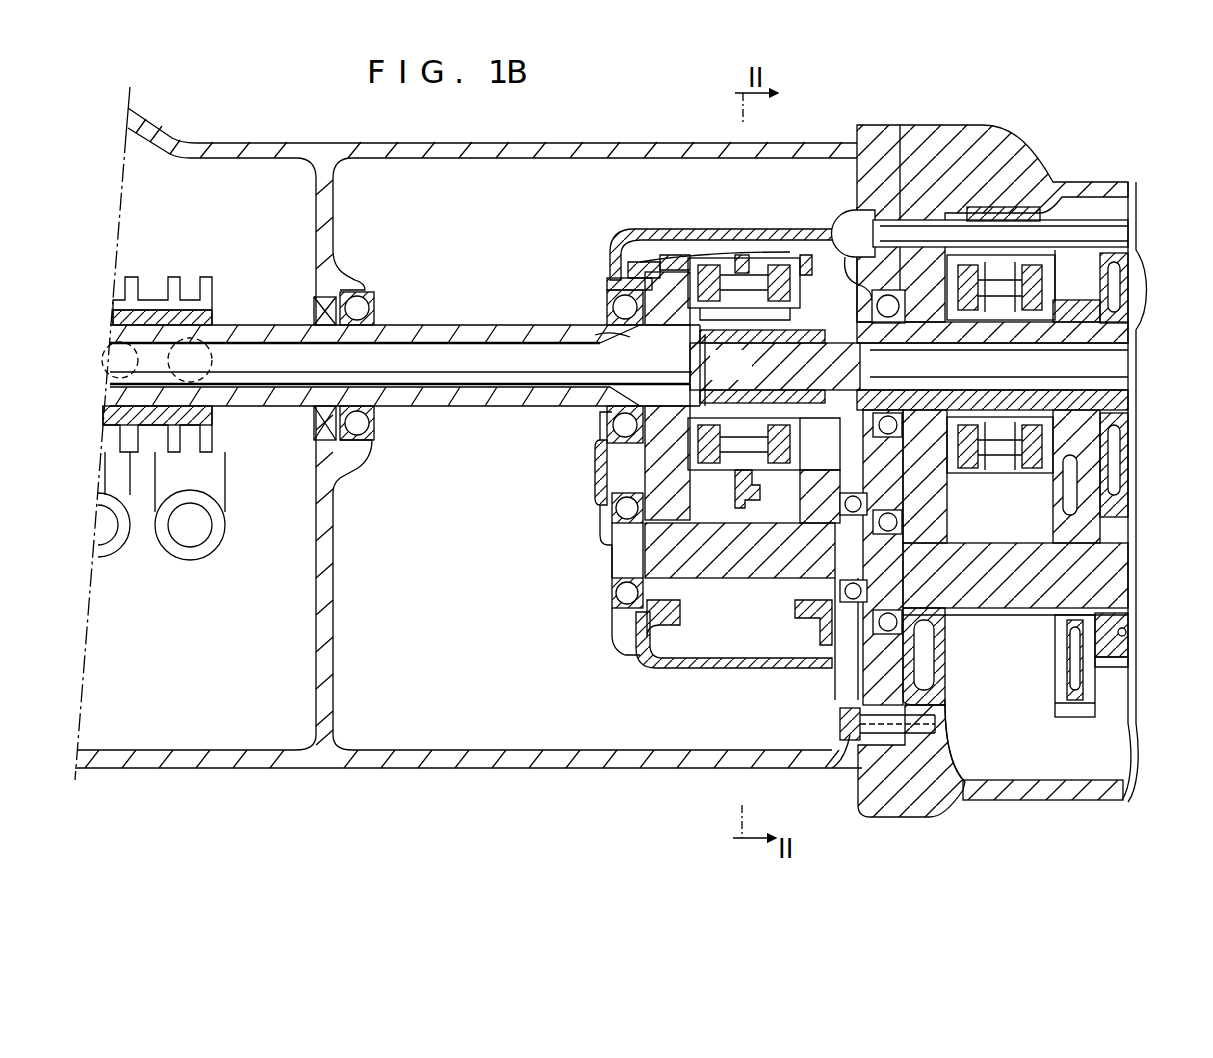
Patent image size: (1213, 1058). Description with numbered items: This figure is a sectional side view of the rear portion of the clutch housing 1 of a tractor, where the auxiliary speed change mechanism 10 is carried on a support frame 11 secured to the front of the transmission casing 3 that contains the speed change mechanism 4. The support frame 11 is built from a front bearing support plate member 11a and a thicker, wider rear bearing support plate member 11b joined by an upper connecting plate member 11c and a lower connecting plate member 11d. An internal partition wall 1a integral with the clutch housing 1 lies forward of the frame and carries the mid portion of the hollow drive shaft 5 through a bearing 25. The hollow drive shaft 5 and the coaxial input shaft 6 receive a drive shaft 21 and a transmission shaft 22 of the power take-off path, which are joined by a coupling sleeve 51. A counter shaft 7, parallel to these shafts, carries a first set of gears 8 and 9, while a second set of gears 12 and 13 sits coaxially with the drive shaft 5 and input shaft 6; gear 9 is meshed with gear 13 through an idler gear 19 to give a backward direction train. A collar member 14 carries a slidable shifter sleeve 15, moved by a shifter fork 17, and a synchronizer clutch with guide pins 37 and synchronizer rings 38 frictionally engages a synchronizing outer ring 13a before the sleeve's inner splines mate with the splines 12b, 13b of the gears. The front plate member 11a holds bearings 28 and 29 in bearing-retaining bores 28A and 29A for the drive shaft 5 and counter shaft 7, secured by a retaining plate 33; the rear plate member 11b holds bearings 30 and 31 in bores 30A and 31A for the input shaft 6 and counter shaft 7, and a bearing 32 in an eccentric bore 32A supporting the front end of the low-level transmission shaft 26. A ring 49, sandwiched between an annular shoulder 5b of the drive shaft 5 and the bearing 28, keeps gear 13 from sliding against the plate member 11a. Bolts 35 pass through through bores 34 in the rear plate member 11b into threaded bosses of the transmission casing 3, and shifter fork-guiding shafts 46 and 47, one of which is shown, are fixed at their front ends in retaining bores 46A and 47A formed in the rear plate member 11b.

The clutch housing 1 is at (178, 148).
The internal partition wall 1a is at (333, 592).
The transmission casing 3 is at (1075, 192).
The speed change mechanism 4 is at (1085, 280).
The drive shaft 5 is at (462, 324).
The annular shoulder 5b is at (660, 332).
The input shaft 6 is at (955, 483).
The counter shaft 7 is at (745, 560).
The gear 8 is at (835, 650).
The gear 9 is at (650, 660).
The auxiliary speed change mechanism 10 is at (725, 660).
The support frame 11 is at (704, 226).
The front bearing support plate member 11a is at (600, 498).
The rear bearing support plate member 11b is at (965, 535).
The upper connecting plate member 11c is at (730, 250).
The lower connecting plate member 11d is at (680, 668).
The gear 12 is at (860, 300).
The splines 12b is at (833, 363).
The gear 13 is at (640, 270).
The synchronizing outer ring 13a is at (690, 255).
The splines 13b is at (808, 255).
The collar member 14 is at (690, 338).
The shifter sleeve 15 is at (992, 356).
The shifter fork 17 is at (752, 488).
The idler gear 19 is at (612, 560).
The drive shaft 21 is at (258, 326).
The transmission shaft 22 is at (950, 200).
The bearing 25 is at (357, 292).
The transmission shaft 26 is at (1045, 620).
The bearing 28 is at (607, 430).
The upper bearing-retaining bore 28A is at (618, 284).
The bearing 29 is at (618, 512).
The lower bearing-retaining bore 29A is at (620, 618).
The bearing 30 is at (895, 290).
The upper bearing-retaining bore 30A is at (930, 385).
The bearing 31 is at (840, 522).
The lower bearing-retaining bore 31A is at (798, 612).
The bearing 32 is at (891, 557).
The bearing-retaining bore 32A is at (845, 700).
The retaining plate 33 is at (595, 462).
The through bores 34 is at (858, 770).
The bolts 35 is at (935, 785).
The synchronizer guide pins 37 is at (742, 255).
The synchronizer rings 38 is at (785, 262).
The shifter fork-guiding shaft 46 is at (985, 262).
The shifter fork-guiding shaft 47 is at (1069, 105).
The retaining bore 46A is at (858, 207).
The retaining bore 47A is at (941, 73).
The ring 49 is at (607, 322).
The coupling sleeve 51 is at (765, 340).